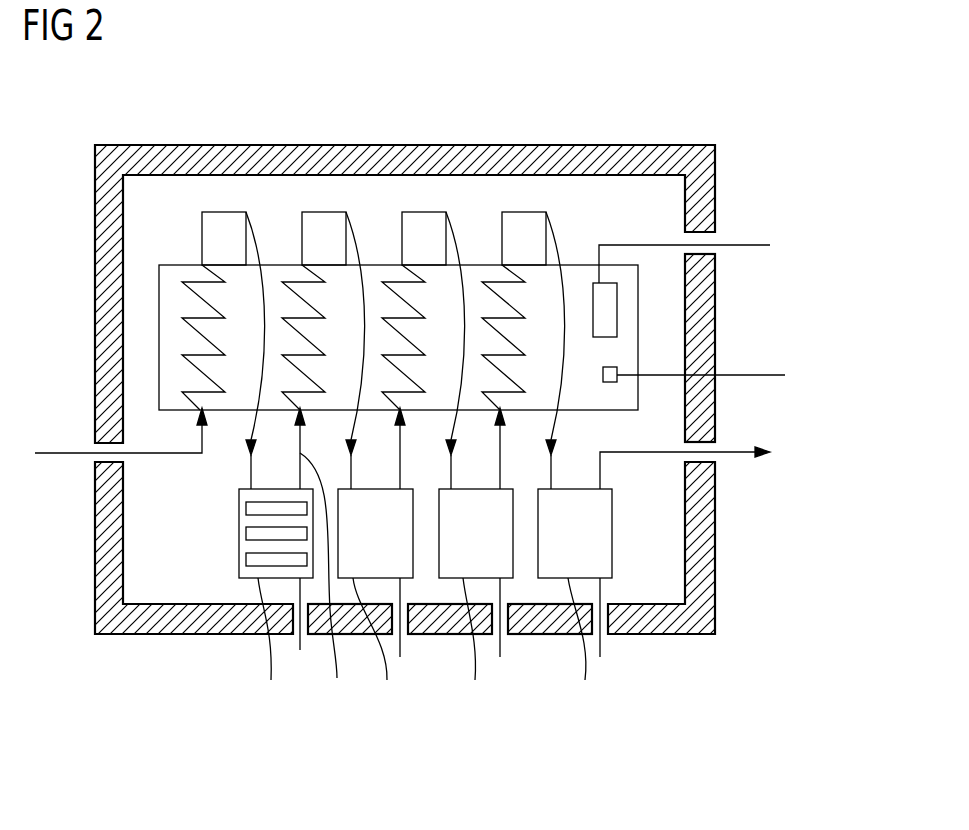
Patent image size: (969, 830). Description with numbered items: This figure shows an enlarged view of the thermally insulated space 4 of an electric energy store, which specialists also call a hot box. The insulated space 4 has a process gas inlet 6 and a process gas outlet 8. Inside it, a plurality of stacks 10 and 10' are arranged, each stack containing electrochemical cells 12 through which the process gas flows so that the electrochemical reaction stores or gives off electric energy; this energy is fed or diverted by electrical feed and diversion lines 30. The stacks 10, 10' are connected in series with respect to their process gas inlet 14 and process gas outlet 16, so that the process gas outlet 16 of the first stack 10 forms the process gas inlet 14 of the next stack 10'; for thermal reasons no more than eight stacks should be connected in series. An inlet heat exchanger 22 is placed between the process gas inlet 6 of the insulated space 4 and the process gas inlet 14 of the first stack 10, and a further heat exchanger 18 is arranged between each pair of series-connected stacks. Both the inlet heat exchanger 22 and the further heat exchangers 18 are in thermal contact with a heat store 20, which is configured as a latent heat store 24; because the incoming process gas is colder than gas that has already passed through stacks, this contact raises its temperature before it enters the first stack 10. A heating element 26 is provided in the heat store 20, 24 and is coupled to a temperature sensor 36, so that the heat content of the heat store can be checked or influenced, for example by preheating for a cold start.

The insulated space 4 is at (158, 145).
The process gas inlet 6 is at (66, 448).
The process gas outlet 8 is at (733, 455).
The stack 10 is at (263, 646).
The stack 10' is at (475, 602).
The electrochemical cell 12 is at (246, 507).
The process gas inlet 14 is at (222, 212).
The process gas outlet 16 is at (325, 584).
The further heat exchanger 18 is at (291, 280).
The heat store 20 is at (701, 332).
The inlet heat exchanger 22 is at (197, 297).
The latent heat store 24 is at (701, 332).
The heating element 26 is at (617, 310).
The electrical feed and diversion line 30 is at (300, 650).
The temperature sensor 36 is at (617, 380).